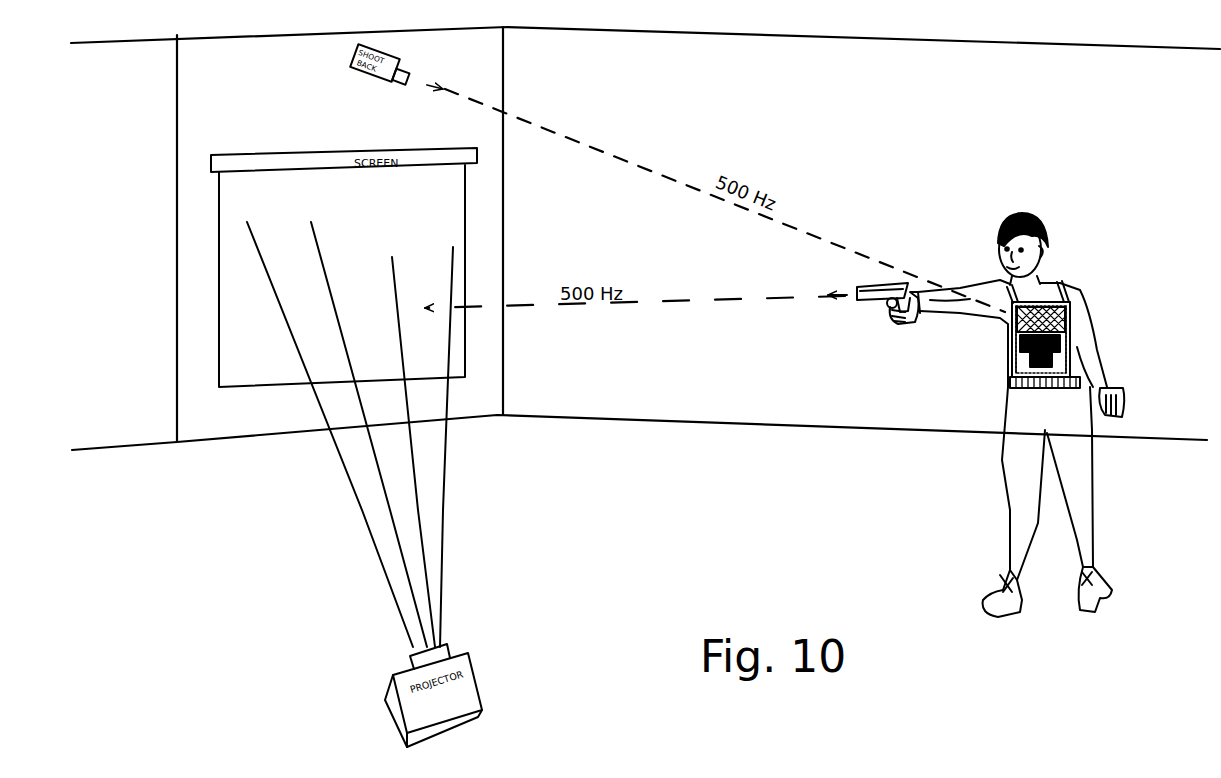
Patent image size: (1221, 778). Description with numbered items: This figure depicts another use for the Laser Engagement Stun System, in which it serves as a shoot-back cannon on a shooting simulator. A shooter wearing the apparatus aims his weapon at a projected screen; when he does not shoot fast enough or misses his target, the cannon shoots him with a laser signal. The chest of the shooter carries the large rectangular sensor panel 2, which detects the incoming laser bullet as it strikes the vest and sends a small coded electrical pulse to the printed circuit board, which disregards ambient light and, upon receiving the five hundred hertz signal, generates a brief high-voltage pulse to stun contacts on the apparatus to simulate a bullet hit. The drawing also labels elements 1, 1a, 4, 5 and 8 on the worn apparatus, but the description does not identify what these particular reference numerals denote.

The target vest 1 is at (1077, 353).
The vest side panel 1a is at (1088, 387).
The sensor panel 2 is at (1025, 344).
The sensor panel 4 is at (1072, 318).
The target marker 5 is at (1013, 356).
The belt band 8 is at (1010, 380).